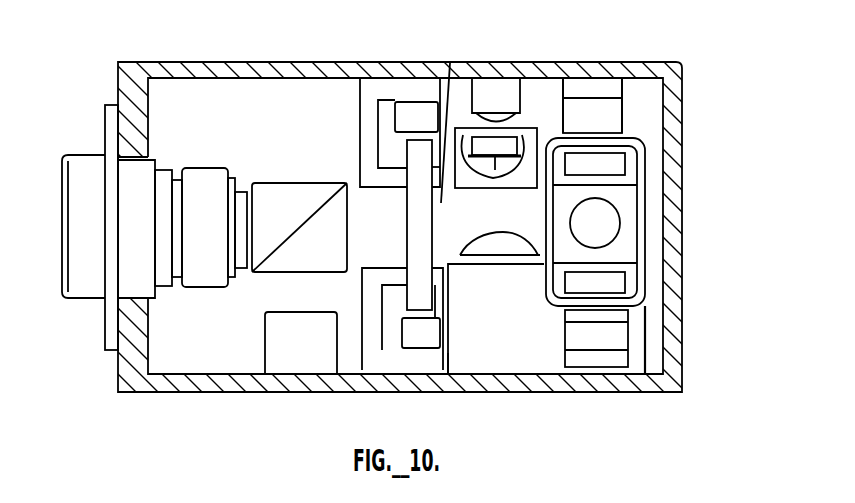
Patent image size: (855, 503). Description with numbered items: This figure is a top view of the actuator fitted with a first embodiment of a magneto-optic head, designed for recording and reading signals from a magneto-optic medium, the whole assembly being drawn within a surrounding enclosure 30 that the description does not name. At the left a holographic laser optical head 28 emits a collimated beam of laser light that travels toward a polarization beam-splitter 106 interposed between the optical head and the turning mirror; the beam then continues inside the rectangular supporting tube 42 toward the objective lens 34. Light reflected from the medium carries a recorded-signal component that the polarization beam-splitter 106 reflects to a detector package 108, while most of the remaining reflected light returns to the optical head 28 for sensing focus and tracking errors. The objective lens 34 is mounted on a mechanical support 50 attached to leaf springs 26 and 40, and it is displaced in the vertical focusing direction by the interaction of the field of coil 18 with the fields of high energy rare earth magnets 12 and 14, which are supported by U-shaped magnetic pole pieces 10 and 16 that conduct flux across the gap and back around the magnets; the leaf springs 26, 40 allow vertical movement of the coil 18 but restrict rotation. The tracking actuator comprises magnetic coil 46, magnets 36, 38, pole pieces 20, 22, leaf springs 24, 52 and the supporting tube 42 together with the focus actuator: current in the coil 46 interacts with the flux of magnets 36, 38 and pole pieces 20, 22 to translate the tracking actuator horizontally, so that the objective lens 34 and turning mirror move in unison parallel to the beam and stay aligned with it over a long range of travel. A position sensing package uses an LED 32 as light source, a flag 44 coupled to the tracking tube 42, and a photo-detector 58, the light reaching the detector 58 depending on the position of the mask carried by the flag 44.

The U-shape magnetic pole piece 10 is at (585, 88).
The magnet 12 is at (603, 112).
The magnet 14 is at (612, 330).
The U-shape magnetic pole piece 16 is at (612, 357).
The coil 18 is at (637, 170).
The pole piece 20 is at (366, 95).
The pole piece 22 is at (372, 347).
The leaf spring 24 is at (449, 353).
The leaf spring 26 is at (450, 63).
The holographic laser optical head 28 is at (203, 177).
The housing 30 is at (127, 64).
The LED 32 is at (488, 93).
The objective lens 34 is at (612, 232).
The magnet 36 is at (423, 340).
The magnet 38 is at (410, 106).
The leaf spring 40 is at (495, 272).
The rectangular tubular structure (supporting tube) 42 is at (477, 250).
The flag 44 is at (535, 128).
The magnetic coil 46 is at (407, 232).
The mechanical support 50 is at (625, 200).
The leaf spring 52 is at (647, 366).
The photo-detector 58 is at (483, 152).
The polarization beam-splitter 106 is at (295, 183).
The detector package 108 is at (303, 352).